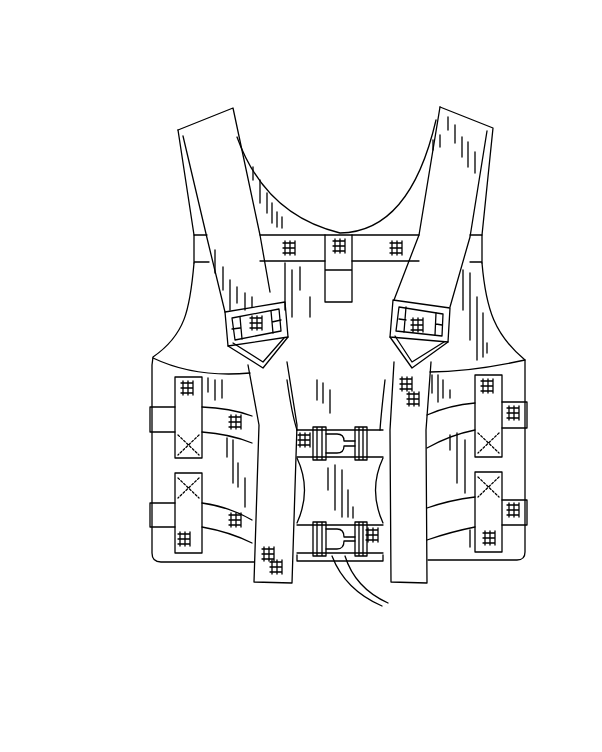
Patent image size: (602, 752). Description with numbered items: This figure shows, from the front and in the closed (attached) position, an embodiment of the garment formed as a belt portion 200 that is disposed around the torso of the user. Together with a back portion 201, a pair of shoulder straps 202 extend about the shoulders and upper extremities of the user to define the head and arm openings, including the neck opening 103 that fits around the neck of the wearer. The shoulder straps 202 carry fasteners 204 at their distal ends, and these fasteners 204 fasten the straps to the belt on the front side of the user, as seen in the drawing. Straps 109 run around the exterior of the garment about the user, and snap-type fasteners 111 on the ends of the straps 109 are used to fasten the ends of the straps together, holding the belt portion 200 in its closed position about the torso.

The belt portion 200 is at (194, 114).
The back portion 201 is at (468, 292).
The shoulder straps 202 is at (246, 132).
The fasteners 204 is at (225, 337).
The neck opening 103 is at (288, 210).
The straps 109 is at (150, 517).
The snap-type fasteners 111 is at (386, 606).